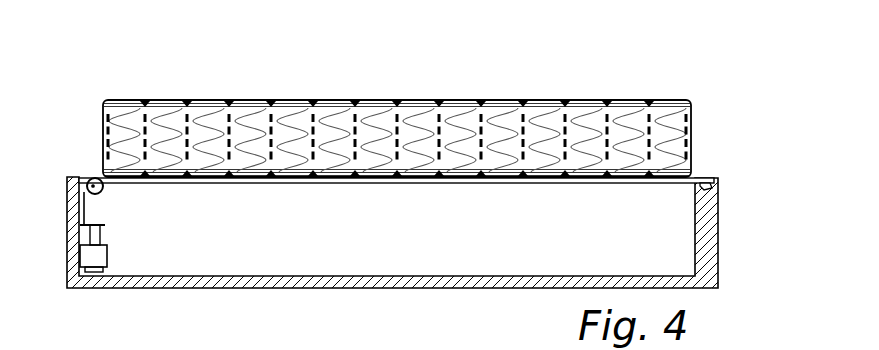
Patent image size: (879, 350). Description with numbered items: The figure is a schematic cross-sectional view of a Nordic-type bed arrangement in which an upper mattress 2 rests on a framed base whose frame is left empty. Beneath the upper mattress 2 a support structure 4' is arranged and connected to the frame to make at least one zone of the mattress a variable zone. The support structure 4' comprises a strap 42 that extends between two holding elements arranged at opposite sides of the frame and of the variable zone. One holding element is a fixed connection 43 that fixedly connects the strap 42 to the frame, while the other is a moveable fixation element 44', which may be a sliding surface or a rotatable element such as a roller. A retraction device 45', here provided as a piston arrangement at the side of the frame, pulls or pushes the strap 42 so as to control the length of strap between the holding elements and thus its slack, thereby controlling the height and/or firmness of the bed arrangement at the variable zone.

The upper mattress 2 is at (672, 124).
The support structure 4' is at (430, 219).
The strap 42 is at (650, 182).
The fixed connection 43 is at (706, 184).
The moveable fixation element 44' is at (69, 176).
The retraction device 45' is at (119, 248).